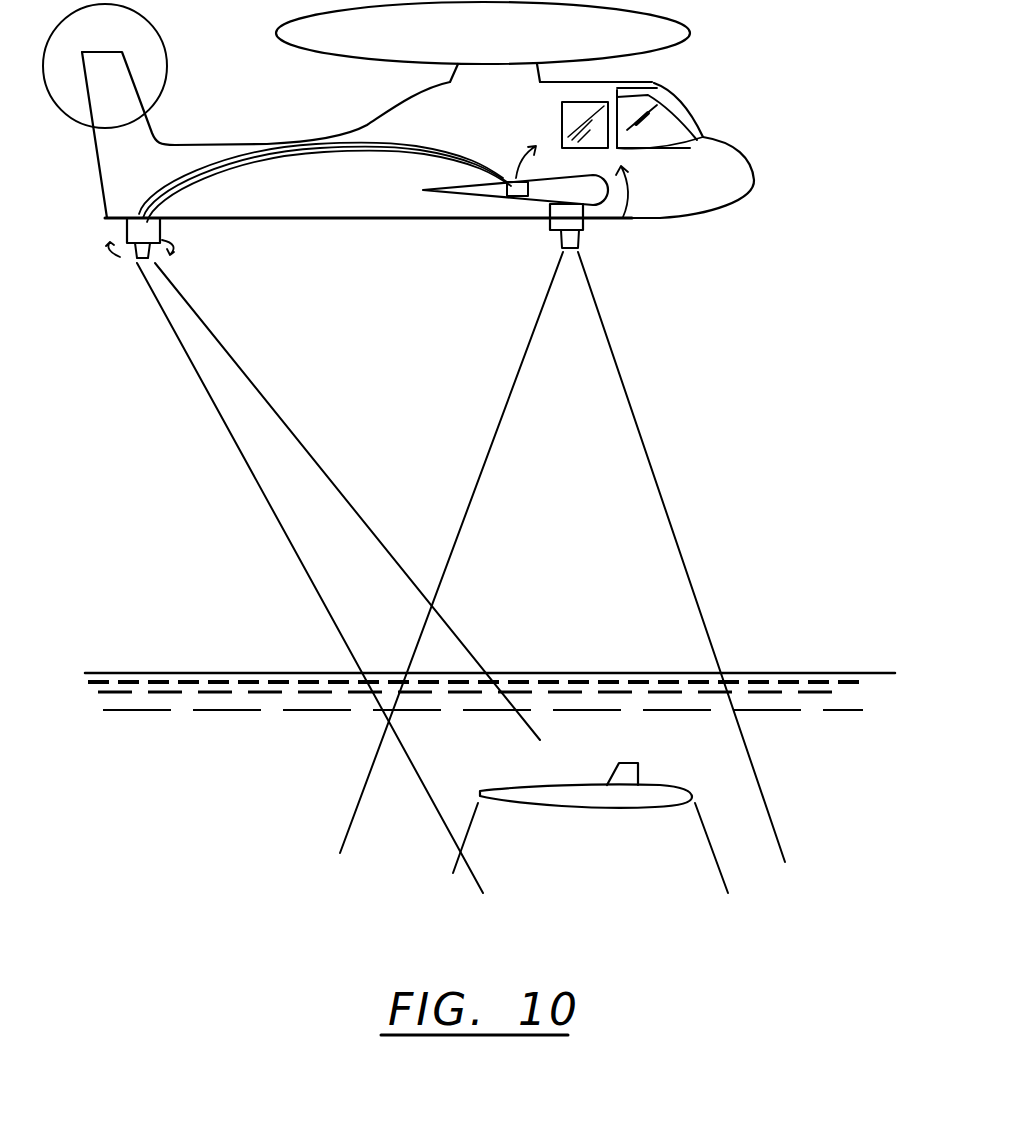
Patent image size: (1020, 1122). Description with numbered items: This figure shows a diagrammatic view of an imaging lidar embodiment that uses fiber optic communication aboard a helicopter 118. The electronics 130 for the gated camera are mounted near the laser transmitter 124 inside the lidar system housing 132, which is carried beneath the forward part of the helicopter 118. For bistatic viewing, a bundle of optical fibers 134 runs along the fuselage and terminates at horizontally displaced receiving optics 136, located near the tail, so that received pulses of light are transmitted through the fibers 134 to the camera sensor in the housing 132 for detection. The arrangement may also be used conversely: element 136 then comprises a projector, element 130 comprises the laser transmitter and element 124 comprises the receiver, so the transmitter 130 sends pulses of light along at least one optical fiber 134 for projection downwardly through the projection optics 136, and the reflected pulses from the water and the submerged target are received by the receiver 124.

The helicopter 118 is at (749, 170).
The laser transmitter 124 is at (585, 229).
The electronics for the gated camera 130 is at (520, 200).
The lidar system housing 132 is at (566, 163).
The bundle of optical fibers 134 is at (247, 173).
The receiving optics 136 is at (123, 232).